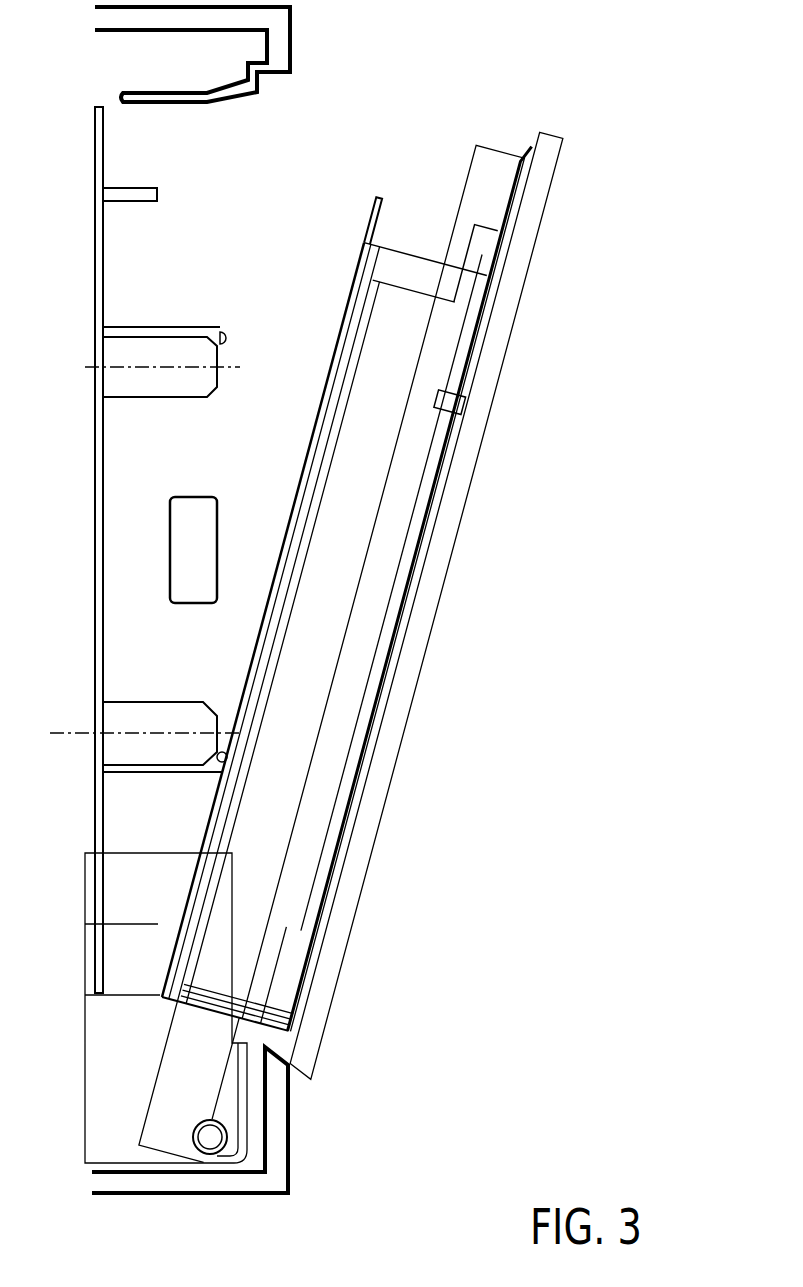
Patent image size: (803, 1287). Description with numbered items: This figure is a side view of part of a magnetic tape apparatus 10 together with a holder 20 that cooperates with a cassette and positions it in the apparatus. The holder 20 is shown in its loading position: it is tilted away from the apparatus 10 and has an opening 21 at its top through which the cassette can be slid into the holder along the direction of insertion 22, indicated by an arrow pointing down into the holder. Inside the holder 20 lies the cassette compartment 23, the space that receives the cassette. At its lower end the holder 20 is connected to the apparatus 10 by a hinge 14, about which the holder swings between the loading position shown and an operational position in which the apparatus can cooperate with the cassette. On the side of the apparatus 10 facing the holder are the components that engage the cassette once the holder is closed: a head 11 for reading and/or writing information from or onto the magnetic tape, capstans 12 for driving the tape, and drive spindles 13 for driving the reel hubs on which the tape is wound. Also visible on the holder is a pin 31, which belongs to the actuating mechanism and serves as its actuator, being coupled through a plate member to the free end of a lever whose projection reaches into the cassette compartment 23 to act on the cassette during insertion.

The apparatus 10 is at (330, 1163).
The head 11 is at (191, 500).
The capstans 12 is at (218, 335).
The drive spindles 13 is at (131, 353).
The hinge 14 is at (204, 1134).
The holder 20 is at (342, 640).
The opening 21 is at (386, 583).
The direction of insertion 22 is at (427, 252).
The cassette compartment 23 is at (325, 626).
The pin 31 is at (450, 402).